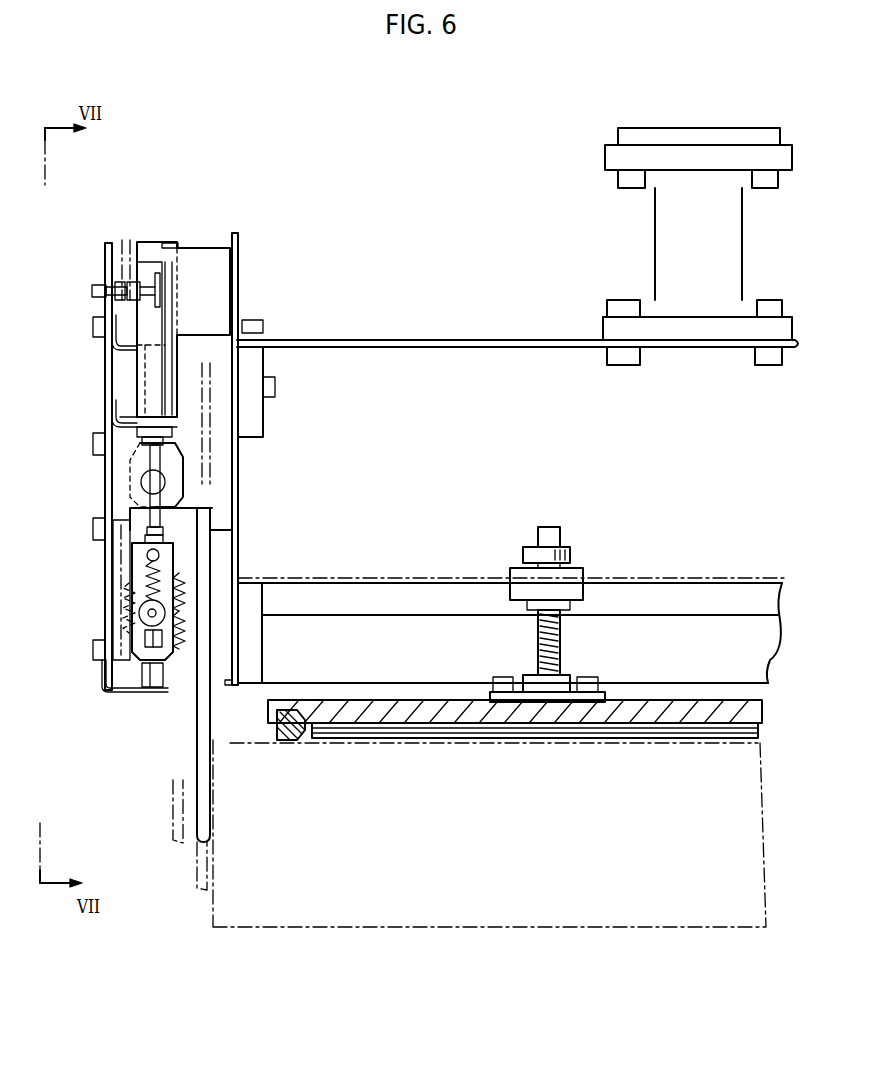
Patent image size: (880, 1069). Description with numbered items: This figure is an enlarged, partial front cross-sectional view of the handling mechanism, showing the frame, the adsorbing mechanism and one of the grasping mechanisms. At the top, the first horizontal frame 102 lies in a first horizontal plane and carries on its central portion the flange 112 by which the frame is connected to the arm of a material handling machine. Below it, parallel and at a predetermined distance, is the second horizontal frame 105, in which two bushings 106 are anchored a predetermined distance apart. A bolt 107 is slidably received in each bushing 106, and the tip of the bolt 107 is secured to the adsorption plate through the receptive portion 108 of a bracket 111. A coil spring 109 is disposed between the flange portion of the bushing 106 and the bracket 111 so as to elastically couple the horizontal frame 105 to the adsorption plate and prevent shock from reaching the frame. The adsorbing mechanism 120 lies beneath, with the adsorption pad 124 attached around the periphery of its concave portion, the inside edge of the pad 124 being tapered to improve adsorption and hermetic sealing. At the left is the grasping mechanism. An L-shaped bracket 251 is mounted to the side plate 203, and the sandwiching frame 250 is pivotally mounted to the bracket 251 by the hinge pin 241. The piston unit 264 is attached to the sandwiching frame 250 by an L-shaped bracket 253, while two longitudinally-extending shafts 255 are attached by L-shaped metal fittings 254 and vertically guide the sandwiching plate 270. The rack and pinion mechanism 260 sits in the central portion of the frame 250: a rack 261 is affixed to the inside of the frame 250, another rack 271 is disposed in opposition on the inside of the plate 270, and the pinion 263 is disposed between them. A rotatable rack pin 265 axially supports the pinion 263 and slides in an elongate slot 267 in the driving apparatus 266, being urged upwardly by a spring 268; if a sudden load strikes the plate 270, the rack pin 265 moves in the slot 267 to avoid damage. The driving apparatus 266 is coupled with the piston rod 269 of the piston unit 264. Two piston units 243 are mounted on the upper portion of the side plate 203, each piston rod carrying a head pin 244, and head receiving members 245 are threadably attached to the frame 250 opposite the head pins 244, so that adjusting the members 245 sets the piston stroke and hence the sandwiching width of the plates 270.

The first horizontal frame 102 is at (494, 340).
The second horizontal frame 105 is at (393, 578).
The bushing 106 is at (573, 558).
The bolt 107 is at (562, 533).
The receptive portion 108 is at (503, 660).
The coil spring 109 is at (562, 648).
The bracket 111 is at (603, 700).
The flange 112 is at (612, 160).
The adsorbing mechanism 120 is at (515, 748).
The adsorption pad 124 is at (290, 742).
The side plate 203 is at (238, 478).
The hinge pin 241 is at (215, 492).
The piston unit 243 is at (207, 300).
The head pin 244 is at (145, 290).
The head receiving member 245 is at (92, 292).
The sandwiching frame 250 is at (105, 402).
The L-shaped bracket 251 is at (165, 482).
The L-shaped bracket 253 is at (115, 417).
The L-shaped metal fitting 254 is at (112, 352).
The shaft 255 is at (137, 370).
The rack and pinion mechanism 260 is at (125, 680).
The rack 261 is at (125, 596).
The pinion 263 is at (177, 612).
The piston unit 264 is at (160, 243).
The rack pin 265 is at (140, 620).
The driving apparatus 266 is at (135, 548).
The elongate slot 267 is at (140, 665).
The spring 268 is at (150, 570).
The piston rod 269 is at (148, 462).
The sandwiching plate 270 is at (197, 745).
The rack 271 is at (187, 628).